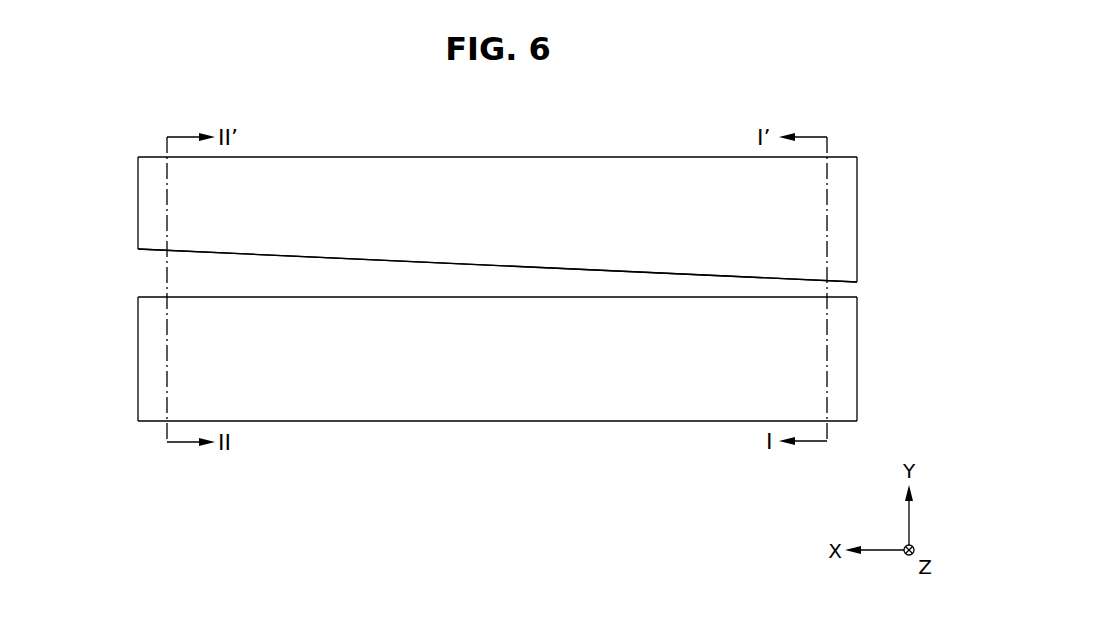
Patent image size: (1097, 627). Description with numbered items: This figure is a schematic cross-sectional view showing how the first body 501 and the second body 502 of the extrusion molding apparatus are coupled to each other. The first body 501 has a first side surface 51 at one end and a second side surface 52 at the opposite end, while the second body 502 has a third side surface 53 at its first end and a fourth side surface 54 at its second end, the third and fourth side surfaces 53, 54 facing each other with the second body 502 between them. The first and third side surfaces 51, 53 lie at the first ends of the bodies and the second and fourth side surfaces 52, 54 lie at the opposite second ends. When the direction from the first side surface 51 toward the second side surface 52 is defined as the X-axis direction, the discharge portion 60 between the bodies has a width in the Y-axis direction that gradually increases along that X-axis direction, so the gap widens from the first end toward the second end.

The first body 501 is at (490, 397).
The second body 502 is at (490, 180).
The first side surface 51 is at (857, 357).
The second side surface 52 is at (138, 357).
The third side surface 53 is at (857, 201).
The fourth side surface 54 is at (138, 201).
The discharge portion 60 is at (362, 276).